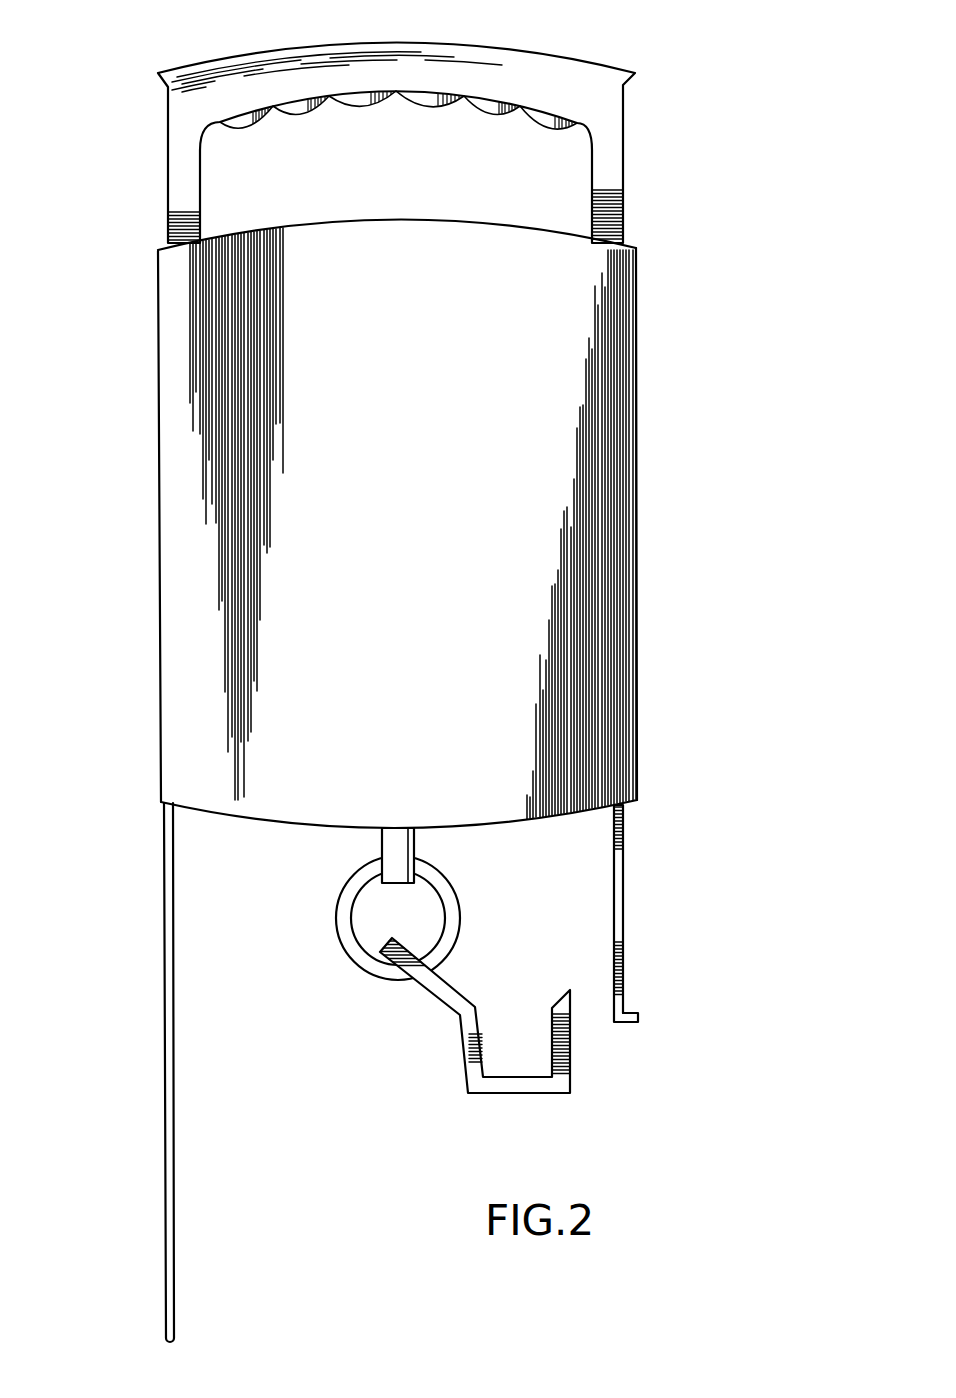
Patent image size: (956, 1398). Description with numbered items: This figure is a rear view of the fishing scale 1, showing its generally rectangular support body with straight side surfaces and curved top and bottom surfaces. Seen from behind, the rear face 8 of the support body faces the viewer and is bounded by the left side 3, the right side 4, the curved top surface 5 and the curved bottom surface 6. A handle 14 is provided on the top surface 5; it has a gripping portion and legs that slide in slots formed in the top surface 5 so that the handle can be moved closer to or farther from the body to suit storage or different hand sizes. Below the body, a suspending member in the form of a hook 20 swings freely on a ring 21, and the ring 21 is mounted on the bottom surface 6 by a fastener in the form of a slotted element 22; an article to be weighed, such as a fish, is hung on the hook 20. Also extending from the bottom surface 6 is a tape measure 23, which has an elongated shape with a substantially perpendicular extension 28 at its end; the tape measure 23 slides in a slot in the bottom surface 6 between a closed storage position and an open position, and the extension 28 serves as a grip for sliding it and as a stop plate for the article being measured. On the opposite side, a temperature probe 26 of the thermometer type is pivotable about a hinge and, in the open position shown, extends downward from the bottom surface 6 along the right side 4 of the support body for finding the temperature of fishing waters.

The fishing scale 1 is at (77, 317).
The handle 14 is at (506, 78).
The top surface 5 is at (400, 222).
The rear face 8 is at (386, 533).
The right side 4 is at (158, 490).
The left side 3 is at (637, 485).
The bottom surface 6 is at (518, 820).
The slotted element 22 is at (378, 842).
The ring 21 is at (345, 950).
The hook 20 is at (462, 1035).
The temperature probe 26 is at (165, 965).
The tape measure 23 is at (625, 898).
The extension 28 is at (628, 1022).